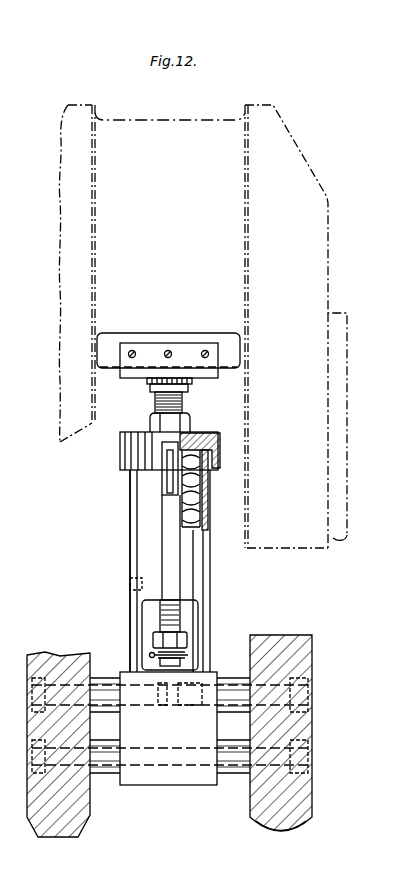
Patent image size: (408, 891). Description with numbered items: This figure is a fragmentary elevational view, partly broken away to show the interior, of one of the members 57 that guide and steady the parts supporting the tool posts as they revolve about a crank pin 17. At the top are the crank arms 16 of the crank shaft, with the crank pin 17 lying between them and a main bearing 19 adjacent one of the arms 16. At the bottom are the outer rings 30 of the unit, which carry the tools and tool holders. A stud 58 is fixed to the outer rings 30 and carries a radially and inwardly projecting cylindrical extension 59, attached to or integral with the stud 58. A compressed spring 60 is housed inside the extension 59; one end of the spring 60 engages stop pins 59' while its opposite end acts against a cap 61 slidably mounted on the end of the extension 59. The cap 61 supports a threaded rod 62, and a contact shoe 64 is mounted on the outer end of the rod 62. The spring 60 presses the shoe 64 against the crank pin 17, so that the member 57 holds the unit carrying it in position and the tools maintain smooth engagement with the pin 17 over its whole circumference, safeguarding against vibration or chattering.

The crank arms 16 is at (203, 326).
The crank pin 17 is at (170, 159).
The main bearings 19 is at (333, 538).
The outer rings 30 is at (62, 838).
The members 57 is at (153, 552).
The stud 58 is at (177, 780).
The cylindrical extension 59 is at (110, 571).
The stop pins 59' is at (114, 592).
The compressed spring 60 is at (209, 485).
The cap 61 is at (207, 432).
The threaded rod 62 is at (155, 403).
The contact shoe 64 is at (182, 347).